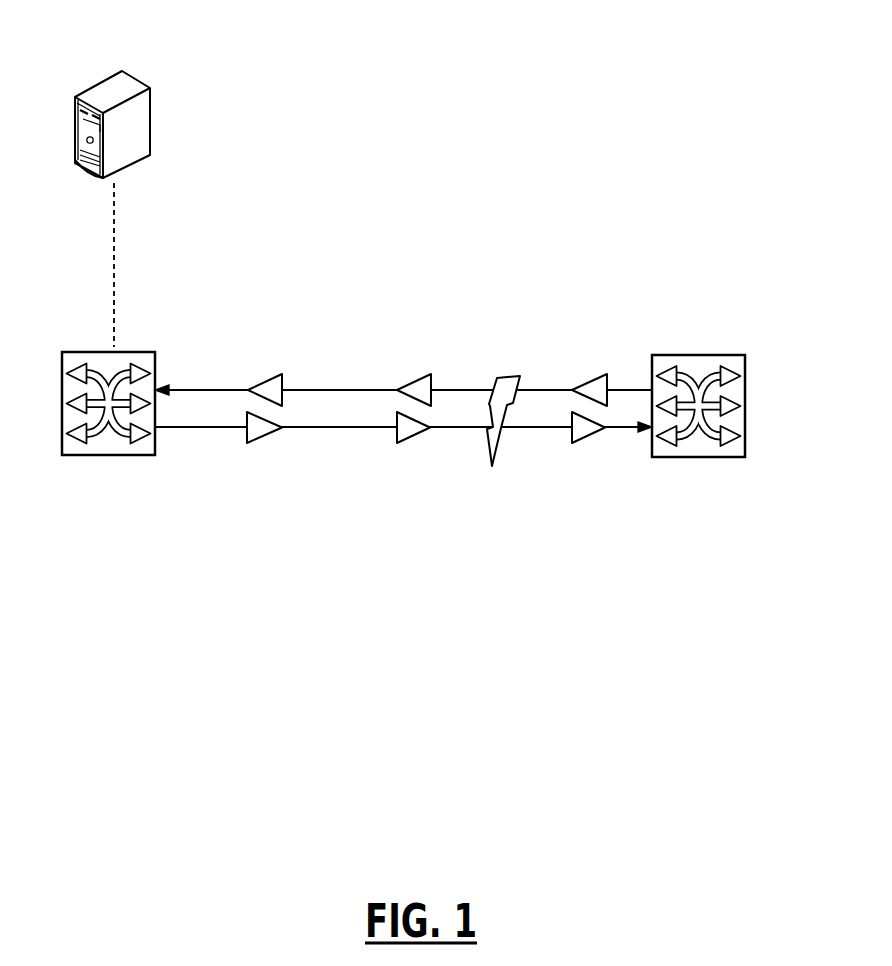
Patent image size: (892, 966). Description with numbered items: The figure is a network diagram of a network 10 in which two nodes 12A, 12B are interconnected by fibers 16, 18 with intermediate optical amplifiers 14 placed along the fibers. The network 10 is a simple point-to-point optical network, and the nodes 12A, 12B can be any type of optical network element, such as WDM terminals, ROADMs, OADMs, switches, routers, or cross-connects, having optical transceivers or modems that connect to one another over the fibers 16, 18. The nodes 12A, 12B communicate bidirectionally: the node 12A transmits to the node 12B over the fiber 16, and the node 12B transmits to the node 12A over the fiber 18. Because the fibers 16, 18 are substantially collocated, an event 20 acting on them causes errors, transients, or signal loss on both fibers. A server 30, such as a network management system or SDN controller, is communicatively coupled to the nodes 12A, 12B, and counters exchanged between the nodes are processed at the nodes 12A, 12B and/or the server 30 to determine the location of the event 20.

The network 10 is at (535, 150).
The node 12A is at (130, 352).
The node 12B is at (700, 355).
The optical amplifier 14 is at (268, 375).
The fiber 16 is at (403, 363).
The fiber 18 is at (370, 427).
The event 20 is at (483, 455).
The server 30 is at (177, 73).